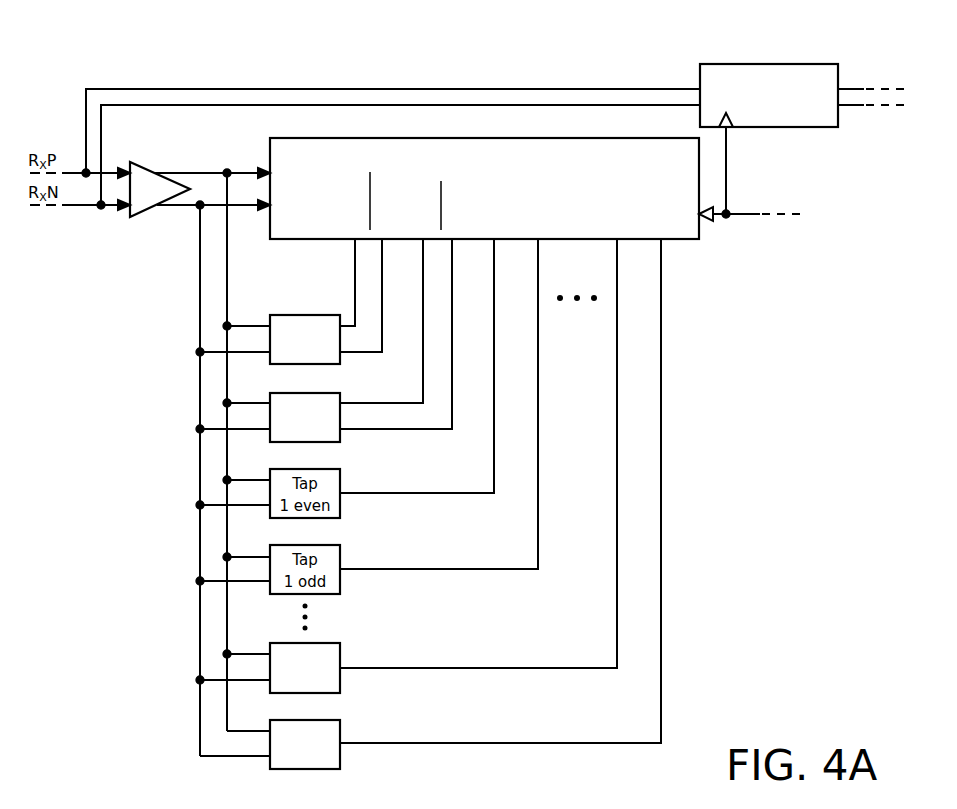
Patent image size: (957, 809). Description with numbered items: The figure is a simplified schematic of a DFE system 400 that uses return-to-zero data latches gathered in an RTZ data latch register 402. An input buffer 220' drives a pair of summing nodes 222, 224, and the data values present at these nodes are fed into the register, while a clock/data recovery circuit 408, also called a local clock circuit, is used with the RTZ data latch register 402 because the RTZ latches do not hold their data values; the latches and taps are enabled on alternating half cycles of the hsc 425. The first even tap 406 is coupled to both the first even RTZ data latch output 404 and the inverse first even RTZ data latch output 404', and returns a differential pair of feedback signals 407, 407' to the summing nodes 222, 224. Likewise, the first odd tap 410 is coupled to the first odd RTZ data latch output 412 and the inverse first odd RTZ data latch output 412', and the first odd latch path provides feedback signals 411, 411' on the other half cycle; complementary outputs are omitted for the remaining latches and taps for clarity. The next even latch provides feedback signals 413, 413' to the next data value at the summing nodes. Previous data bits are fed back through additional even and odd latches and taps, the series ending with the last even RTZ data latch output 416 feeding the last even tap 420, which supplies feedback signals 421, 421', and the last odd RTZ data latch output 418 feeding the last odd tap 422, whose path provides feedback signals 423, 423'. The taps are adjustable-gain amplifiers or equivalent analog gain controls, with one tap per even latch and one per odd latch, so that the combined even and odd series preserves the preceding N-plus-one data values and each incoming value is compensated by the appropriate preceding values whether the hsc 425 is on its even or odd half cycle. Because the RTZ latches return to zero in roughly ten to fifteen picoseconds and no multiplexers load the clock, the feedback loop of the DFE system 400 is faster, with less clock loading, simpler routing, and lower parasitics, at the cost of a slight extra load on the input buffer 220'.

The DFE system 400 is at (645, 60).
The RTZ data latch register 402 is at (686, 240).
The even_0 RTZ data latch output 404 is at (323, 282).
The even_0-bar RTZ data latch output 404' is at (380, 295).
The first even tap 406 is at (305, 315).
The feedback signal 407 is at (246, 308).
The feedback signal 407' is at (204, 345).
The clock/data recovery circuit 408 is at (770, 64).
The first odd tap 410 is at (312, 442).
The feedback signal 411 is at (246, 385).
The feedback signal 411' is at (204, 421).
The odd_0 RTZ data latch output 412 is at (381, 321).
The odd_0-bar RTZ data latch output 412' is at (396, 359).
The feedback signal 413 is at (246, 462).
The feedback signal 413' is at (233, 527).
The even_N RTZ data latch output 416 is at (616, 418).
The odd_N RTZ data latch output 418 is at (662, 418).
The last even tap 420 is at (342, 653).
The feedback signal 421 is at (246, 636).
The feedback signal 421' is at (204, 673).
The last odd tap 422 is at (342, 731).
The feedback signal 423 is at (248, 711).
The feedback signal 423' is at (235, 780).
The hsc 425 is at (745, 217).
The input buffer 220' is at (126, 194).
The summing node 222 is at (227, 170).
The summing node 224 is at (200, 208).